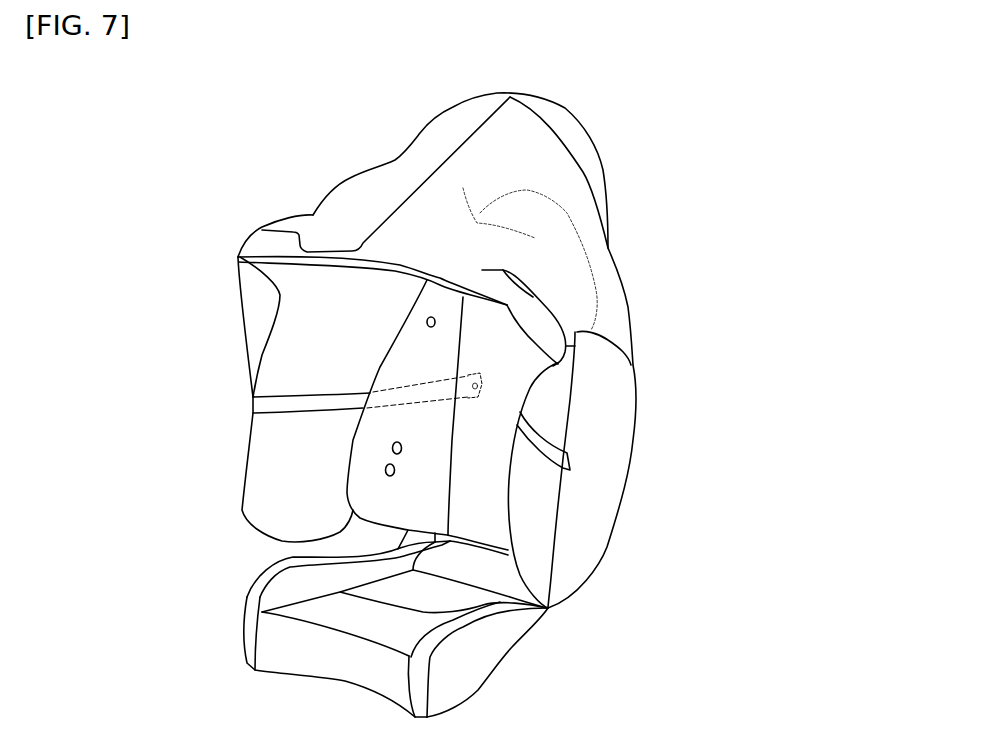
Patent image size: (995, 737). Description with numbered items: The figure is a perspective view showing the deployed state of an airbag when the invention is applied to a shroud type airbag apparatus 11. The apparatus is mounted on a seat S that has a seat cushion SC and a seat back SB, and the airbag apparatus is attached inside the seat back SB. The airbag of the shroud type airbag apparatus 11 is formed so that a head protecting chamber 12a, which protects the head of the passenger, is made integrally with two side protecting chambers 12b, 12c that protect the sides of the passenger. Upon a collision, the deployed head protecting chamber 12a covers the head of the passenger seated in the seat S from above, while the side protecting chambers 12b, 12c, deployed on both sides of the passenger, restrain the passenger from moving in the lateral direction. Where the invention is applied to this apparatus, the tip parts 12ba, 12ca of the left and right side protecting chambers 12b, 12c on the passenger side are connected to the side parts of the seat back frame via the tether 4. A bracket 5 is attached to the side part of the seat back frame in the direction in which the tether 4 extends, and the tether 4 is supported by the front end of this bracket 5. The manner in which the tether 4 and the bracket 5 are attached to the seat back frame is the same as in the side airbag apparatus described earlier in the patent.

The shroud type airbag apparatus 11 is at (612, 133).
The head protecting chamber 12a is at (392, 176).
The side protecting chamber 12b is at (297, 353).
The tip part 12ba is at (262, 384).
The side protecting chamber 12c is at (593, 512).
The tip part 12ca is at (547, 480).
The tether 4 is at (305, 405).
The bracket 5 is at (413, 384).
The seat S is at (593, 597).
The seat back SB is at (477, 528).
The seat cushion SC is at (337, 672).